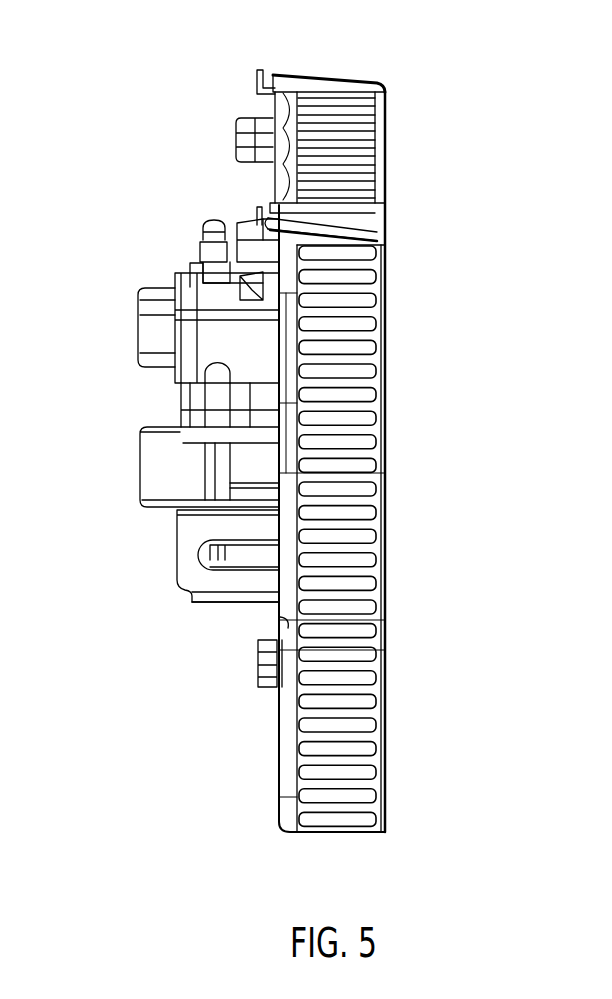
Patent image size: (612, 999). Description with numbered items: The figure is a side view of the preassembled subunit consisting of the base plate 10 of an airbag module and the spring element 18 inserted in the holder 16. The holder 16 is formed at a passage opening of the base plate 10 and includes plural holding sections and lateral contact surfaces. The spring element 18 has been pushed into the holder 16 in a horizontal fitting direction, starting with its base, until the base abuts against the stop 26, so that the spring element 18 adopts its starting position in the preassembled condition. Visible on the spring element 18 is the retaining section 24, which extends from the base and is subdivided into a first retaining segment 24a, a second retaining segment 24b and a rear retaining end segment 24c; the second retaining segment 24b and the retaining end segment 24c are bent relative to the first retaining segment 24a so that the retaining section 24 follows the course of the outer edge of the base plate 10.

The base plate 10 is at (333, 74).
The holder 16 is at (202, 606).
The spring element 18 is at (191, 246).
The retaining section 24 is at (197, 455).
The first retaining segment 24a is at (200, 545).
The second retaining segment 24b is at (203, 473).
The rear retaining end segment 24c is at (210, 218).
The stop 26 is at (194, 599).